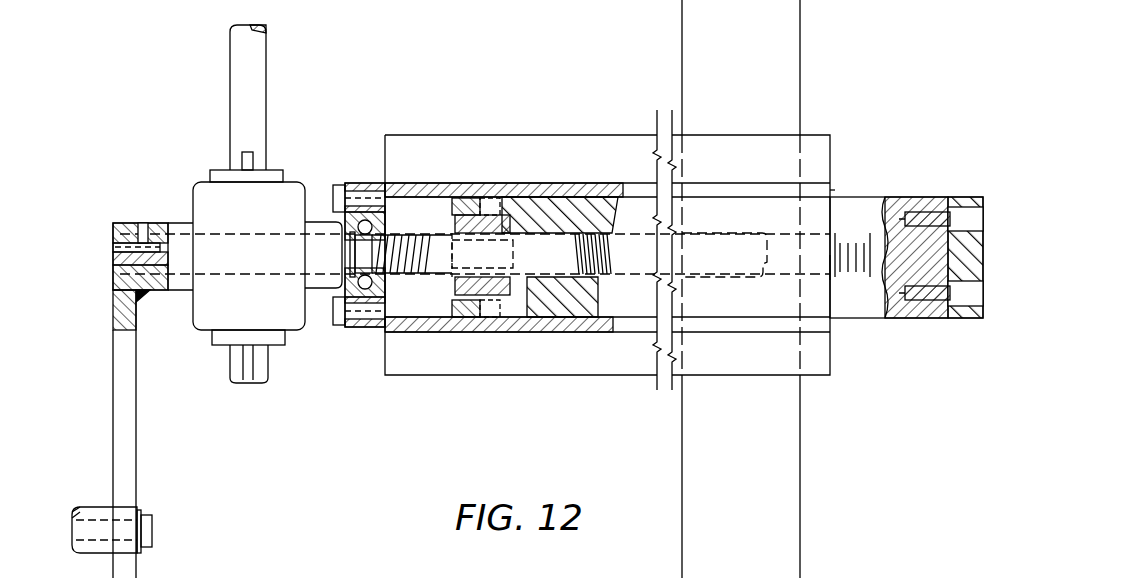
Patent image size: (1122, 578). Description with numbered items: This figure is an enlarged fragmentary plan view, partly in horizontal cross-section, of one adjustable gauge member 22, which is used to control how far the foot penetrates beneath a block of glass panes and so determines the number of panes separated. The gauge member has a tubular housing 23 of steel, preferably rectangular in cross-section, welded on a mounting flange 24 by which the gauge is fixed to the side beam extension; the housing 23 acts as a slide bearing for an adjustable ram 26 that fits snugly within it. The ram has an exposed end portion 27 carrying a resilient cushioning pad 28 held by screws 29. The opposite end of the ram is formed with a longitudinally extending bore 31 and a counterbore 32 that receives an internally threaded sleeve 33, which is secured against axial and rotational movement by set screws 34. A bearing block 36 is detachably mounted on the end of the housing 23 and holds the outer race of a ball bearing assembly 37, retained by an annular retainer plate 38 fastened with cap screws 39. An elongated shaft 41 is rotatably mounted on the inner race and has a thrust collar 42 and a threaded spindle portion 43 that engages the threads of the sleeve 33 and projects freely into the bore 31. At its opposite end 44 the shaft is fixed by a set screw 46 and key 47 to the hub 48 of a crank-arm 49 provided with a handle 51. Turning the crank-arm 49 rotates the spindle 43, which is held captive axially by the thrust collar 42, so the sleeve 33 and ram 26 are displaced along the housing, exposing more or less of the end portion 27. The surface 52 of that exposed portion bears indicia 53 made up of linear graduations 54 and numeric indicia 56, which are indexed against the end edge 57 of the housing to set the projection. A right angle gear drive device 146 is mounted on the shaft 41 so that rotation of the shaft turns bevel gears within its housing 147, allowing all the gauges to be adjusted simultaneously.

The gauge member 22 is at (373, 150).
The tubular housing 23 is at (585, 188).
The mounting flange 24 is at (613, 146).
The adjustable ram 26 is at (580, 300).
The exposed end portion 27 is at (850, 197).
The resilient cushioning pad 28 is at (968, 200).
The screws 29 is at (955, 318).
The longitudinally extending bore 31 is at (547, 272).
The counterbore 32 is at (437, 207).
The internally threaded sleeve 33 is at (465, 300).
The set screws 34 is at (490, 200).
The bearing block 36 is at (362, 183).
The ball bearing assembly 37 is at (372, 328).
The annular retainer plate 38 is at (350, 326).
The cap screws 39 is at (334, 194).
The elongated shaft 41 is at (347, 247).
The thrust collar 42 is at (348, 266).
The threaded spindle portion 43 is at (420, 268).
The opposite end 44 is at (150, 300).
The set screw 46 is at (143, 223).
The key 47 is at (116, 246).
The hub 48 is at (118, 280).
The crank-arm 49 is at (132, 462).
The handle 51 is at (93, 507).
The surface 52 is at (870, 320).
The indicia 53 is at (826, 270).
The linear graduations 54 is at (851, 284).
The numeric indicia 56 is at (871, 206).
The end edge 57 is at (834, 198).
The right angle gear drive device 146 is at (205, 163).
The housing 147 is at (267, 312).